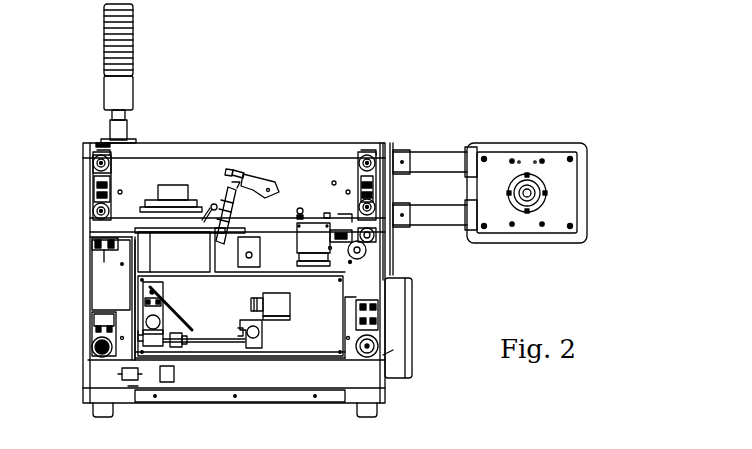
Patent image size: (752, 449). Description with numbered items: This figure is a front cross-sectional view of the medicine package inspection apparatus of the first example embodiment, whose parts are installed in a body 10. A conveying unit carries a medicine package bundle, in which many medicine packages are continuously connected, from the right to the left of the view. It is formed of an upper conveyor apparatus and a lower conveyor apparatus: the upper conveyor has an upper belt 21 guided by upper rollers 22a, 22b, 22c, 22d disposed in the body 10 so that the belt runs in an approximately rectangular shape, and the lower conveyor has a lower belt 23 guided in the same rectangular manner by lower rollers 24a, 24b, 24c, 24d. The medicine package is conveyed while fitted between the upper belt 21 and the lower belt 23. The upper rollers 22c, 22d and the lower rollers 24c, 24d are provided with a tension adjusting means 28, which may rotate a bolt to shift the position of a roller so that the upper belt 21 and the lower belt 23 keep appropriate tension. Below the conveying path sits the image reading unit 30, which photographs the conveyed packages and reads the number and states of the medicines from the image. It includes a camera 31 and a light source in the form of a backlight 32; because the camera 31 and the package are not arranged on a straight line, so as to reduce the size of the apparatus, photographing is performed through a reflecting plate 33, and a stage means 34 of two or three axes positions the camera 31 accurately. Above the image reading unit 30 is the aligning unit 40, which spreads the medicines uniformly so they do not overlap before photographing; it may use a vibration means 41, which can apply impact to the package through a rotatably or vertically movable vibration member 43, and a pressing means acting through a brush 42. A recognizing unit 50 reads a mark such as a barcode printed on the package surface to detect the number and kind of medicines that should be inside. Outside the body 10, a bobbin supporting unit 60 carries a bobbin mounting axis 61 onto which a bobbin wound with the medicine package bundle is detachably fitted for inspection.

The body 10 is at (83, 370).
The upper belt 21 is at (95, 186).
The upper roller 22a is at (378, 204).
The upper roller 22b is at (95, 213).
The upper roller 22c is at (93, 163).
The upper roller 22d is at (376, 157).
The lower belt 23 is at (92, 283).
The lower roller 24a is at (378, 241).
The lower roller 24b is at (97, 243).
The lower roller 24c is at (92, 347).
The lower roller 24d is at (378, 345).
The tension adjusting means 28 is at (372, 310).
The image reading unit 30 is at (255, 372).
The camera 31 is at (287, 305).
The backlight 32 is at (172, 185).
The reflecting plate 33 is at (192, 326).
The stage means 34 is at (224, 345).
The aligning unit 40 is at (326, 192).
The vibration means 41 is at (338, 214).
The brush 42 is at (210, 208).
The vibration member 43 is at (315, 222).
The recognizing unit 50 is at (258, 178).
The bobbin supporting unit 60 is at (493, 140).
The bobbin mounting axis 61 is at (527, 210).